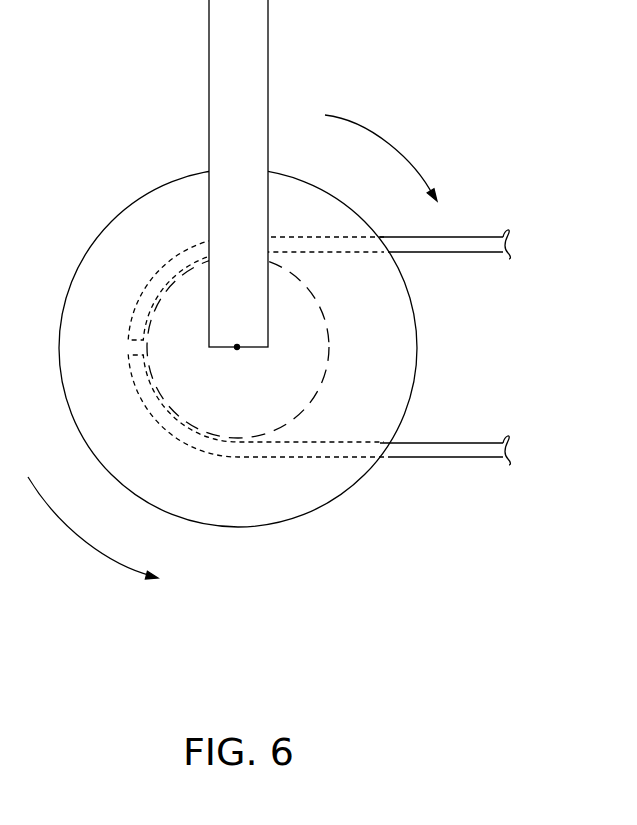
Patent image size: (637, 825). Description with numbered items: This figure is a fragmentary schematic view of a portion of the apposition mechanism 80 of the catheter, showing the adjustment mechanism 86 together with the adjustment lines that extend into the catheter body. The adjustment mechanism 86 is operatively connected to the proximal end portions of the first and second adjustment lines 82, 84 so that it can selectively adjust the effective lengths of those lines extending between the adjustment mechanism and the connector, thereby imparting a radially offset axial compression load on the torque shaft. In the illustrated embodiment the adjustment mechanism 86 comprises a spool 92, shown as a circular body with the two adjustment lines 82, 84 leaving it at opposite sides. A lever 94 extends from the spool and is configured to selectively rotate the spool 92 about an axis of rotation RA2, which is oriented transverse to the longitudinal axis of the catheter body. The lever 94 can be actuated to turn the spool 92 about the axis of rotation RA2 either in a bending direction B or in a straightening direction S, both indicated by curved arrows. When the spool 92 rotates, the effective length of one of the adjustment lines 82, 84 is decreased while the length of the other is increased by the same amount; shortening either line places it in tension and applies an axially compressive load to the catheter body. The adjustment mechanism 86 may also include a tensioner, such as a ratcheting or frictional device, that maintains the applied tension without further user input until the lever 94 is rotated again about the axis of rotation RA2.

The apposition mechanism 80 is at (284, 353).
The first adjustment line 82 is at (460, 458).
The second adjustment line 84 is at (470, 237).
The adjustment mechanism 86 is at (232, 527).
The spool 92 is at (340, 348).
The lever 94 is at (268, 52).
The axis of rotation RA2 is at (237, 349).
The bending direction B is at (381, 158).
The straightening direction S is at (93, 528).